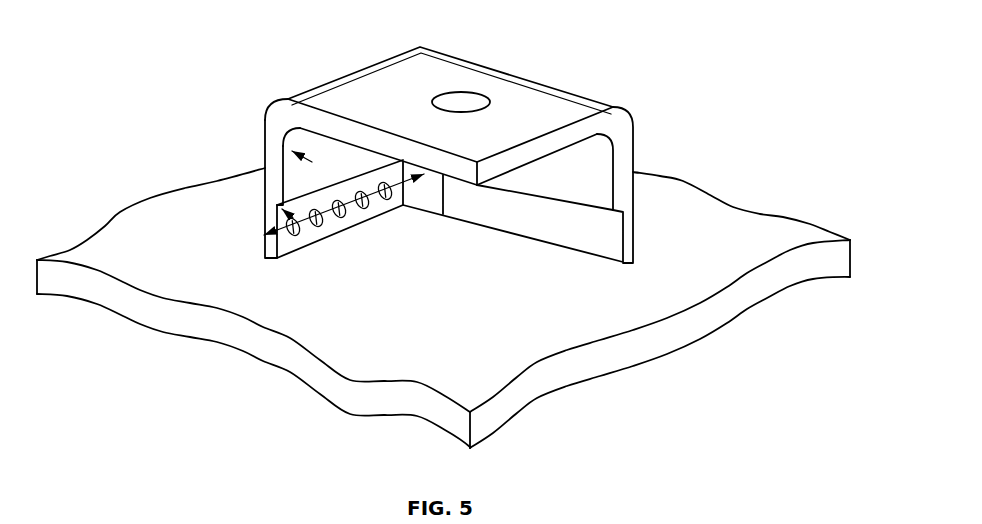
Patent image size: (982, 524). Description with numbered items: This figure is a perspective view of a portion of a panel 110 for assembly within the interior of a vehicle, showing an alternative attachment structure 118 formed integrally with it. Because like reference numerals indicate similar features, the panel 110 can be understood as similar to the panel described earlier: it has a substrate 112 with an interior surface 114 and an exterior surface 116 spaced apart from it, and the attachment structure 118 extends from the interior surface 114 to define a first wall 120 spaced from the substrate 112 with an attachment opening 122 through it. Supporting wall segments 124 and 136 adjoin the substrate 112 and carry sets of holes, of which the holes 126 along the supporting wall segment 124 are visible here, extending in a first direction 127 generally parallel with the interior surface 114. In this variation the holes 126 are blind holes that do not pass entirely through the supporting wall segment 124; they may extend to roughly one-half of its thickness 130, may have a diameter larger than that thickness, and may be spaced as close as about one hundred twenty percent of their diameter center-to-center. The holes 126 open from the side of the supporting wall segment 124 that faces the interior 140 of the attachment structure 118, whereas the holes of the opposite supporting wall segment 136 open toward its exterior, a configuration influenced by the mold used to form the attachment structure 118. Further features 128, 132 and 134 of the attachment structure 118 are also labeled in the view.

The panel 110 is at (772, 105).
The panel 112 is at (749, 292).
The top surface of panel 114 is at (752, 234).
The bottom surface of panel 116 is at (645, 377).
The attachment structure 118 is at (470, 176).
The top plate 120 is at (560, 102).
The aperture 122 is at (462, 95).
The supporting wall segment 124 is at (287, 247).
The holes 126 is at (296, 235).
The tab row direction 127 is at (268, 238).
The first leg 128 is at (263, 154).
The leg outer surface 130 is at (258, 199).
The bend 132 is at (258, 135).
The second leg 134 is at (627, 172).
The supporting wall segment 136 is at (618, 241).
The interior 140 is at (541, 222).